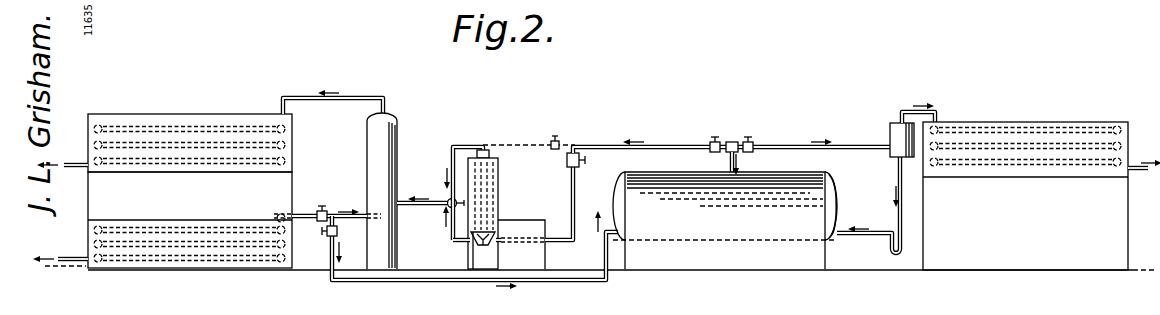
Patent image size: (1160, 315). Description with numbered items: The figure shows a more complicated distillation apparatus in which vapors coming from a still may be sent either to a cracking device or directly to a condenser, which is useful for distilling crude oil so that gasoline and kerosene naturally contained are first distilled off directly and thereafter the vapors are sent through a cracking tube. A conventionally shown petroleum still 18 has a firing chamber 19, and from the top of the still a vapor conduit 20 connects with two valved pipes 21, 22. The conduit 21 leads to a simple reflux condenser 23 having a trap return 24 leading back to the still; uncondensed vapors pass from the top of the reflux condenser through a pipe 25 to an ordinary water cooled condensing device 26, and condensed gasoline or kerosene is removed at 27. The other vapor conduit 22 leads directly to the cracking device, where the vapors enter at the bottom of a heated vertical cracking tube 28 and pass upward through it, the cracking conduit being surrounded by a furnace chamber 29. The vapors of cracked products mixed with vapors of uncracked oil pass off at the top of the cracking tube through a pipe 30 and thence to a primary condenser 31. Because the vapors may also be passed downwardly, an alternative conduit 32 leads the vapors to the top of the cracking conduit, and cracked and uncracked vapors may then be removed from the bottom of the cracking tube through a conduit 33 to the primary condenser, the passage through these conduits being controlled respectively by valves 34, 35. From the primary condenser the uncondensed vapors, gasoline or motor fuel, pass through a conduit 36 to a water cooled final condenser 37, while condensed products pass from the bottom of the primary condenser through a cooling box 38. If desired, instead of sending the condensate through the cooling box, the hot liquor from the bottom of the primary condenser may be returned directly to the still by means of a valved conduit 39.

The petroleum still 18 is at (725, 220).
The firing chamber 19 is at (699, 272).
The vapor conduit 20 is at (728, 160).
The valved pipe 21 is at (782, 145).
The valved pipe 22 is at (607, 145).
The reflux condenser 23 is at (892, 128).
The trap return 24 is at (872, 242).
The pipe 25 is at (940, 110).
The water cooled condensing device 26 is at (1117, 122).
The outlet 27 is at (1143, 176).
The cracking tube 28 is at (500, 172).
The furnace chamber 29 is at (503, 208).
The pipe 30 is at (452, 157).
The primary condenser 31 is at (399, 126).
The alternative conduit 32 is at (506, 141).
The conduit 33 is at (447, 233).
The valve 34 is at (586, 162).
The valve 35 is at (557, 133).
The conduit 36 is at (353, 97).
The final condenser 37 is at (230, 118).
The cooling box 38 is at (160, 264).
The valved conduit 39 is at (440, 283).